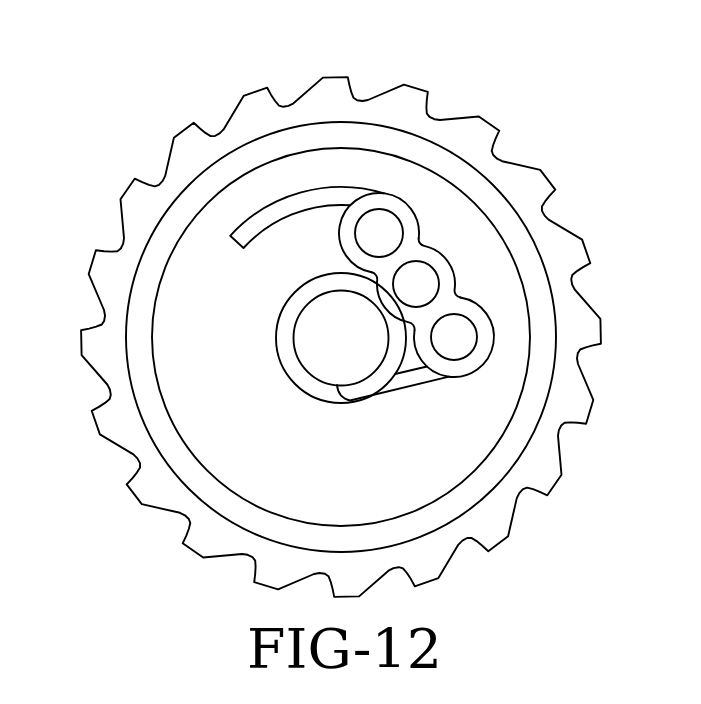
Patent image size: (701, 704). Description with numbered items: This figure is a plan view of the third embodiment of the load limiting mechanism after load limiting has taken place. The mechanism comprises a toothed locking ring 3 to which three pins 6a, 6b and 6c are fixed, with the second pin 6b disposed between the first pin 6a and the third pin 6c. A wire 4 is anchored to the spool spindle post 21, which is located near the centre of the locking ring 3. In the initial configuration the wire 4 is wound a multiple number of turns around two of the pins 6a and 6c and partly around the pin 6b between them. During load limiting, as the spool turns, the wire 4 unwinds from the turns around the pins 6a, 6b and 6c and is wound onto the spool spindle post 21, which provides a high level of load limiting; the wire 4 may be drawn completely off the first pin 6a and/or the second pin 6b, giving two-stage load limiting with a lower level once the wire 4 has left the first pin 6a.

The locking ring 3 is at (535, 458).
The wire 4 is at (258, 223).
The spool spindle post 21 is at (313, 342).
The first pin 6a is at (377, 230).
The second pin 6b is at (427, 280).
The third pin 6c is at (463, 335).